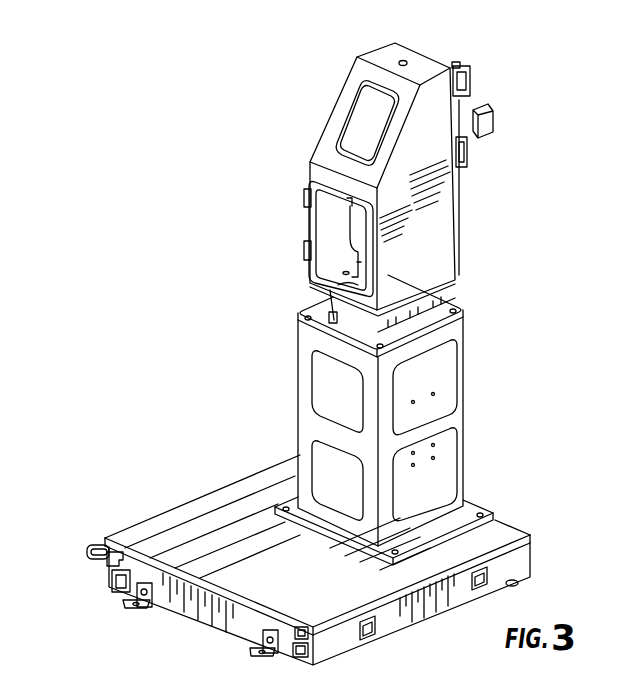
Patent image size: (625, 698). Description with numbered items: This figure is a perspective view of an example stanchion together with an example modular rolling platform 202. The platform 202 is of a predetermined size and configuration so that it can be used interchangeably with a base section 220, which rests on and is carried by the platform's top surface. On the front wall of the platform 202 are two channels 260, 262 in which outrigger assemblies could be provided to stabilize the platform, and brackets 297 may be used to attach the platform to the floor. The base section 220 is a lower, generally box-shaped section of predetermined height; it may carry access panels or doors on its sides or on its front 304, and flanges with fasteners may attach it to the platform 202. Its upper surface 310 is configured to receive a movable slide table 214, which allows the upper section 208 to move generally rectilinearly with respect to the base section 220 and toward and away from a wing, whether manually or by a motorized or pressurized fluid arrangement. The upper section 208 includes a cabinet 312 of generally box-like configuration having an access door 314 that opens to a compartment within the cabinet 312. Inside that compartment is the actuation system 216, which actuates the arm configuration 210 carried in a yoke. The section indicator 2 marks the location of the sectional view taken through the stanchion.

The section line of FIG. 2 is at (432, 73).
The modular rolling platform 202 is at (504, 530).
The upper section 208 is at (455, 227).
The arm configuration 210 is at (480, 94).
The movable slide table 214 is at (300, 322).
The actuation system 216 is at (356, 219).
The base section 220 is at (468, 408).
The channel 260 is at (113, 582).
The channel 262 is at (320, 652).
The bracket 297 is at (131, 605).
The front 304 is at (310, 172).
The upper surface 310 is at (456, 303).
The cabinet 312 is at (440, 198).
The access door 314 is at (340, 187).